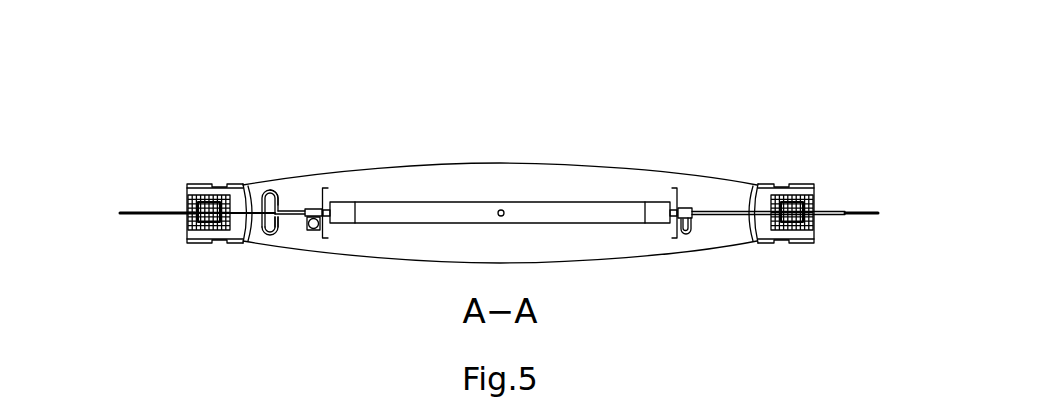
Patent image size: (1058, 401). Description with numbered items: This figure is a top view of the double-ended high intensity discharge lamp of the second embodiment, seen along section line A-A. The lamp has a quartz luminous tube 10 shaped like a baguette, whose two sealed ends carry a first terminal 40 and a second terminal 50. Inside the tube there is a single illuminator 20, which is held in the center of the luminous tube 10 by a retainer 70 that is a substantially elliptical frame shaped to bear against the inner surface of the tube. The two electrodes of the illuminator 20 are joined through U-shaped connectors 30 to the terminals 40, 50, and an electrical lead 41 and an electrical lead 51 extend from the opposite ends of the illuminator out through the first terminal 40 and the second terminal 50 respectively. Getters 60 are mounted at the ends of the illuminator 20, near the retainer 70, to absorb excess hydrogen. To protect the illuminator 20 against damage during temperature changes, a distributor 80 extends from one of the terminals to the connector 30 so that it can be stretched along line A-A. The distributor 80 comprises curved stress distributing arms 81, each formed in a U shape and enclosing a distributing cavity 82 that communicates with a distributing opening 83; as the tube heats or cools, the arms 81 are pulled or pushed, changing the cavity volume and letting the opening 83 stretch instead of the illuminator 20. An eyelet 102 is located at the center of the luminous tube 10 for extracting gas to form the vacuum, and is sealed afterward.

The luminous tube 10 is at (632, 168).
The illuminator 20 is at (412, 213).
The U-shaped connector 30 is at (322, 195).
The first terminal 40 is at (805, 195).
The electrical lead 41 is at (855, 210).
The second terminal 50 is at (205, 200).
The electrical lead 51 is at (130, 212).
The getter 60 is at (313, 235).
The retainer 70 is at (322, 238).
The distributor 80 is at (265, 208).
The curved stress distributing arm 81 is at (270, 234).
The distributing cavity 82 is at (280, 193).
The distributing opening 83 is at (279, 219).
The eyelet 102 is at (504, 216).